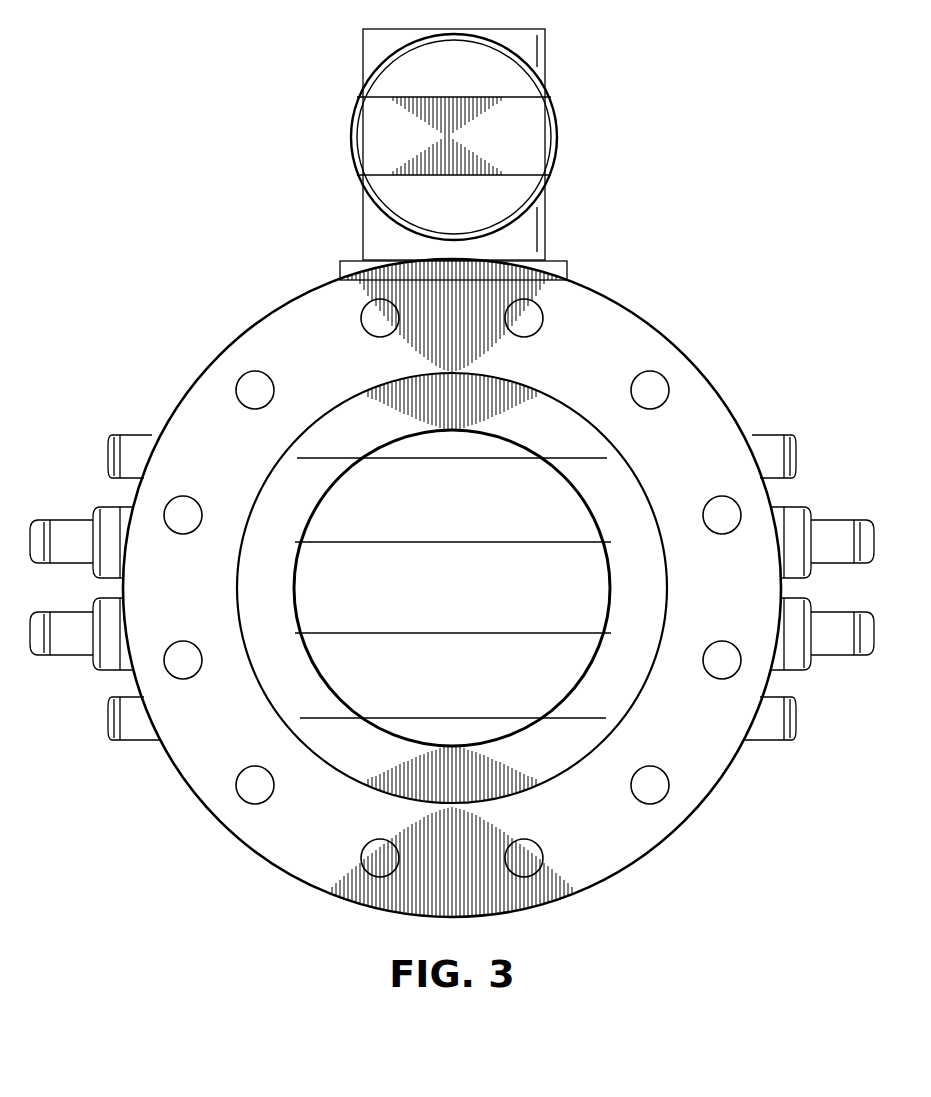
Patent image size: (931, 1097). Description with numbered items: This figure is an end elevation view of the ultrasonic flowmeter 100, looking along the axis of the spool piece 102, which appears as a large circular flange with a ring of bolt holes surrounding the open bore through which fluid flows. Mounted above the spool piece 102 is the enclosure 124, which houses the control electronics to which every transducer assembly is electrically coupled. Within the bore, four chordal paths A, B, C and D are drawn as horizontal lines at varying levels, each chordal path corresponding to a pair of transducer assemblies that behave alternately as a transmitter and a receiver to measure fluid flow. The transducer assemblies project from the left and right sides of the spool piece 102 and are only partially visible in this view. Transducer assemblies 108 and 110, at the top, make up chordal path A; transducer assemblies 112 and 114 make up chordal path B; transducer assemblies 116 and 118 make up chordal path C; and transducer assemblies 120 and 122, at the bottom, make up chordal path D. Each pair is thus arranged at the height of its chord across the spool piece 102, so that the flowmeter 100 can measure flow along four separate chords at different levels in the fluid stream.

The ultrasonic flowmeter 100 is at (672, 68).
The spool piece 102 is at (237, 335).
The transducer assembly 108 is at (106, 456).
The transducer assembly 110 is at (798, 456).
The transducer assembly 112 is at (60, 522).
The transducer assembly 114 is at (845, 522).
The transducer assembly 116 is at (62, 656).
The transducer assembly 118 is at (845, 656).
The transducer assembly 120 is at (106, 724).
The transducer assembly 122 is at (798, 724).
The enclosure 124 is at (352, 137).
The chordal path A is at (470, 461).
The chordal path B is at (437, 546).
The chordal path C is at (470, 636).
The chordal path D is at (436, 715).